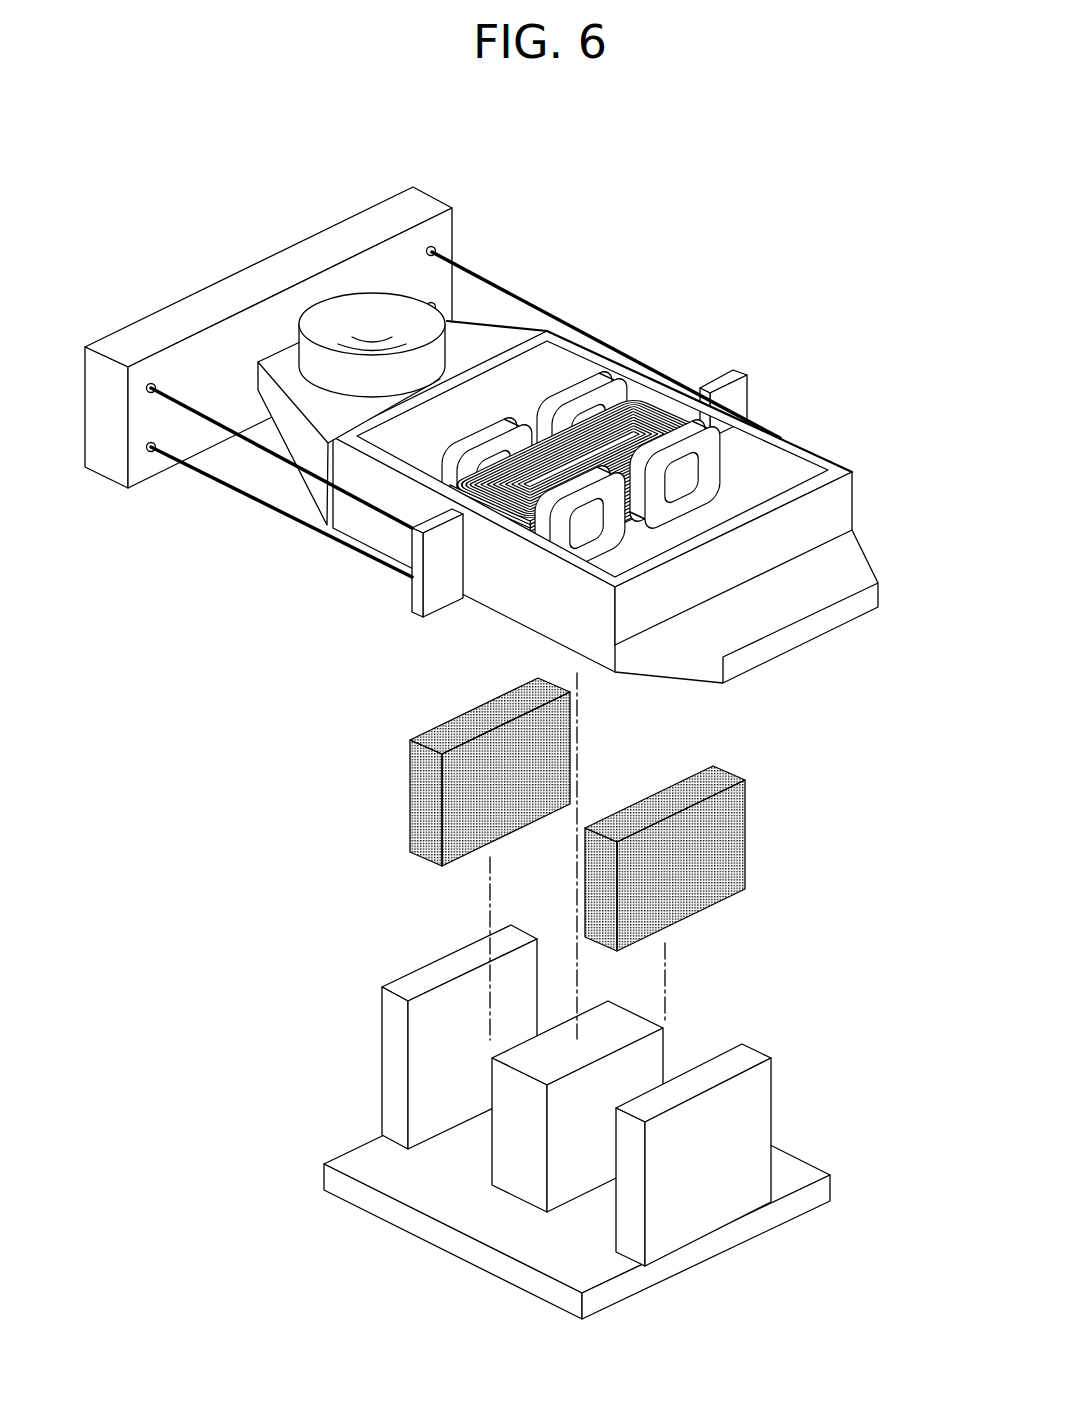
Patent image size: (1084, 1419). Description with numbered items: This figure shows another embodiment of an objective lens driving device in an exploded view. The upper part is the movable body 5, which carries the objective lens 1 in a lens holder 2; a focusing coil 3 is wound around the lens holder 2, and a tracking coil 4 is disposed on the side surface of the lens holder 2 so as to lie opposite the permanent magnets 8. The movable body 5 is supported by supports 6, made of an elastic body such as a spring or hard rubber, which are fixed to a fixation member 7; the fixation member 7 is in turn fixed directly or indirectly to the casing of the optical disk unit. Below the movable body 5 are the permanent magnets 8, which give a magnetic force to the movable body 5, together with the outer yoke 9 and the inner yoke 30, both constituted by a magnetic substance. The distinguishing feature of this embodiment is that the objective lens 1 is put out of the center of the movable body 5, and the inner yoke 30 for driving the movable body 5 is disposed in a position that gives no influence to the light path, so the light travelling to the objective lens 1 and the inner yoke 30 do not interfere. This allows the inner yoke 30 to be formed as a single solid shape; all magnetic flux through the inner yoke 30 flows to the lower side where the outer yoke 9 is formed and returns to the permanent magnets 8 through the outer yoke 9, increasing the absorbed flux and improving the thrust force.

The objective lens 1 is at (377, 316).
The lens holder 2 is at (298, 392).
The focusing coil 3 is at (638, 410).
The tracking coil 4 is at (710, 465).
The movable body 5 is at (592, 459).
The supports 6 is at (258, 500).
The fixation member 7 is at (274, 273).
The permanent magnets 8 is at (428, 807).
The outer yoke 9 is at (394, 1059).
The inner yoke 30 is at (499, 1173).